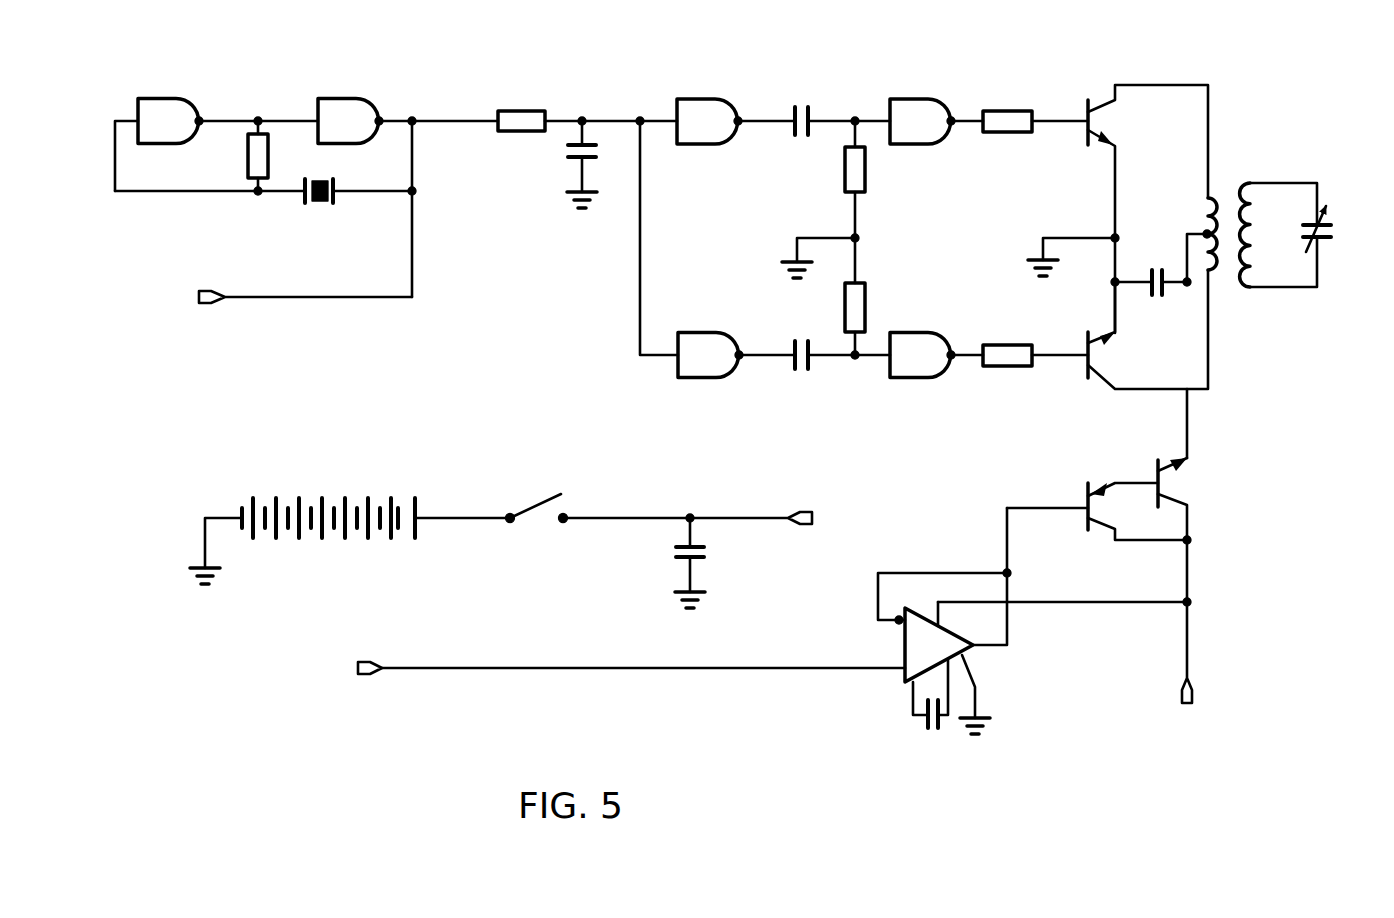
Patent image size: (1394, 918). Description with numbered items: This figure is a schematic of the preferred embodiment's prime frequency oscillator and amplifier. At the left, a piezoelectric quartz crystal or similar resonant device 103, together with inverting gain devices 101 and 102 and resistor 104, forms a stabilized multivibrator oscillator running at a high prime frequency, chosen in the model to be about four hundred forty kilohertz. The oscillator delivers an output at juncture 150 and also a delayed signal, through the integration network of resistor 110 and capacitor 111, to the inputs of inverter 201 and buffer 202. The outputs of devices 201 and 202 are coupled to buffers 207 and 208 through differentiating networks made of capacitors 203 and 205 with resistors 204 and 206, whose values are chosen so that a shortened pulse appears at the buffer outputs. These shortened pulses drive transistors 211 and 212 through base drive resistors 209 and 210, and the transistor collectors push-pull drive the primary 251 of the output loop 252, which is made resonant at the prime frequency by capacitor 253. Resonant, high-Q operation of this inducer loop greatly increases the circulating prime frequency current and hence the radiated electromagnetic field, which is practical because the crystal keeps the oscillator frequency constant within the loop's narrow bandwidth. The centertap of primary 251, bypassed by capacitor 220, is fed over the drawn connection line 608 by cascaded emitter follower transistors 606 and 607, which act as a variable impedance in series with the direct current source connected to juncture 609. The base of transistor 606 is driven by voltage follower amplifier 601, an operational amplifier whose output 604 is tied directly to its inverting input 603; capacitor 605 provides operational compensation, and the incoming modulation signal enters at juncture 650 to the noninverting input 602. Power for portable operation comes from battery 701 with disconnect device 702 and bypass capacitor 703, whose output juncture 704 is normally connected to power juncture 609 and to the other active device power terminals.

The inverting gain device 101 is at (175, 117).
The inverting gain device 102 is at (357, 117).
The piezoelectric quartz crystal 103 is at (342, 198).
The resistor 104 is at (242, 157).
The integration network resistor 110 is at (501, 108).
The integration network capacitor 111 is at (561, 148).
The output juncture 150 is at (190, 298).
The inverter 201 is at (706, 115).
The buffer 202 is at (709, 345).
The capacitor 203 is at (816, 112).
The resistor 204 is at (871, 164).
The capacitor 205 is at (790, 375).
The resistor 206 is at (875, 300).
The buffer 207 is at (920, 115).
The buffer 208 is at (921, 346).
The base drive resistor 209 is at (1036, 96).
The base drive resistor 210 is at (1026, 328).
The transistor 211 is at (1104, 122).
The transistor 212 is at (1079, 372).
The bypass capacitor 220 is at (1154, 303).
The output loop primary 251 is at (1206, 217).
The output loop 252 is at (1235, 297).
The capacitor 253 is at (1336, 233).
The voltage follower amplifier 601 is at (939, 642).
The noninverting input 602 is at (811, 656).
The inverting input 603 is at (868, 596).
The output 604 is at (999, 654).
The capacitor 605 is at (918, 727).
The emitter follower transistor 606 is at (1072, 492).
The emitter follower transistor 607 is at (1216, 500).
The supply line 608 is at (1223, 406).
The power juncture 609 is at (1188, 713).
The modulation input juncture 650 is at (356, 671).
The battery 701 is at (343, 491).
The disconnect device 702 is at (567, 503).
The bypass capacitor 703 is at (677, 563).
The output juncture 704 is at (821, 521).